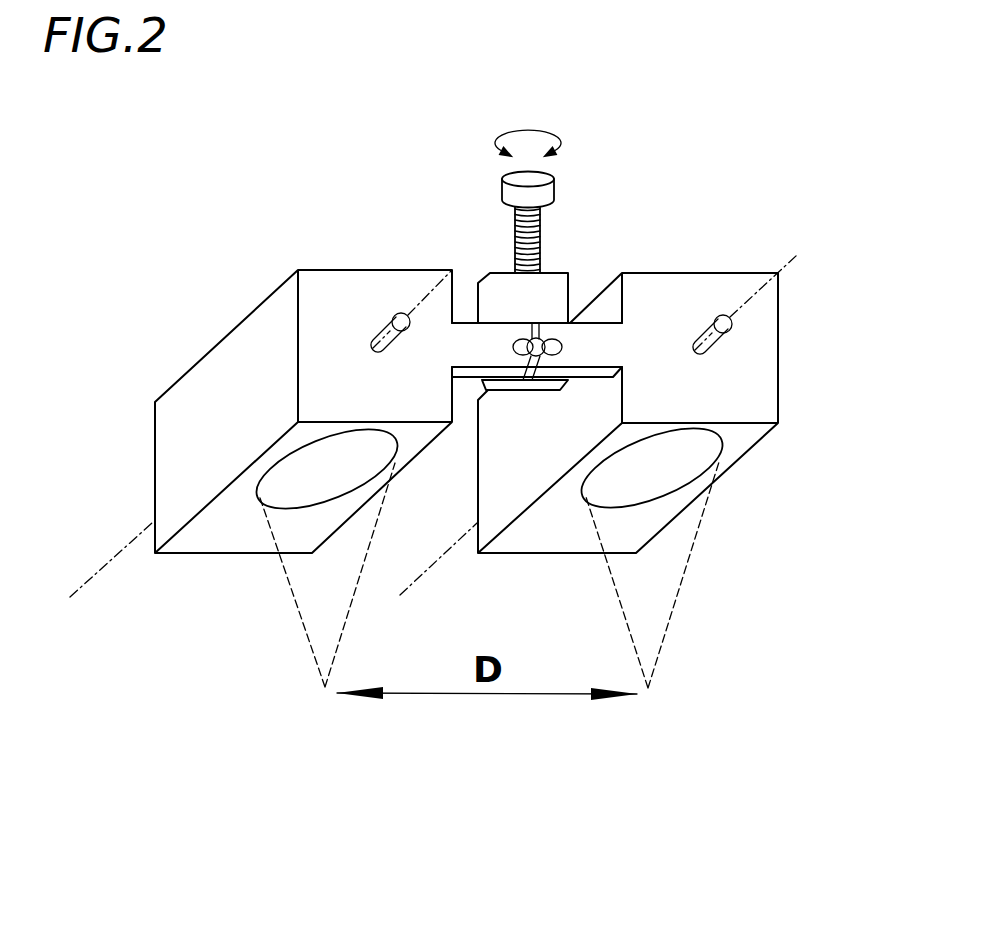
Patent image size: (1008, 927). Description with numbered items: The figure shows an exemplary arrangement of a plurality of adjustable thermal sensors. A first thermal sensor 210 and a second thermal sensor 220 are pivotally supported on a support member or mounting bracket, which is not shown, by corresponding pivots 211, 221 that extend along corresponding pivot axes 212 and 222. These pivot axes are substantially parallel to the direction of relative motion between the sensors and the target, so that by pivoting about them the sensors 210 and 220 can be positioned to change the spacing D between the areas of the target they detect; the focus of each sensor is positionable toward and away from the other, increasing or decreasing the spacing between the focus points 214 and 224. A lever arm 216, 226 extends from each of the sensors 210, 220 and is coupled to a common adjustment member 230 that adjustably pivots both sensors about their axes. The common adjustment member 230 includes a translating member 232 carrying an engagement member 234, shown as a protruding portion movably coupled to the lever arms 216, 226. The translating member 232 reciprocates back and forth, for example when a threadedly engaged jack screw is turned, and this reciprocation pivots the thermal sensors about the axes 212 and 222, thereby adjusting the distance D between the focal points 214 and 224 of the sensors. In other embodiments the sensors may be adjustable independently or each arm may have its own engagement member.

The first thermal sensor 210 is at (174, 374).
The pivot 211 is at (375, 327).
The pivot axis 212 is at (103, 560).
The focus point 214 is at (326, 687).
The lever arm 216 is at (465, 338).
The second thermal sensor 220 is at (679, 256).
The pivot 221 is at (706, 320).
The pivot axis 222 is at (787, 263).
The focus point 224 is at (648, 688).
The lever arm 226 is at (600, 333).
The common adjustment member 230 is at (505, 228).
The translating member 232 is at (545, 283).
The engagement member 234 is at (560, 339).